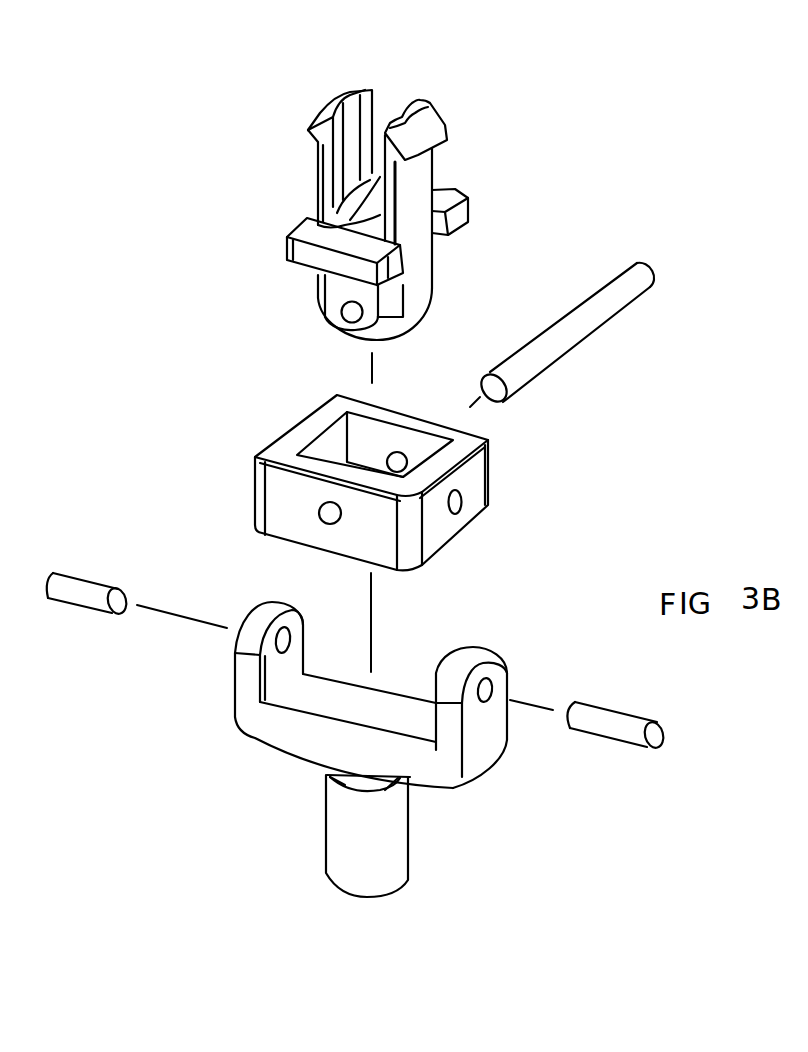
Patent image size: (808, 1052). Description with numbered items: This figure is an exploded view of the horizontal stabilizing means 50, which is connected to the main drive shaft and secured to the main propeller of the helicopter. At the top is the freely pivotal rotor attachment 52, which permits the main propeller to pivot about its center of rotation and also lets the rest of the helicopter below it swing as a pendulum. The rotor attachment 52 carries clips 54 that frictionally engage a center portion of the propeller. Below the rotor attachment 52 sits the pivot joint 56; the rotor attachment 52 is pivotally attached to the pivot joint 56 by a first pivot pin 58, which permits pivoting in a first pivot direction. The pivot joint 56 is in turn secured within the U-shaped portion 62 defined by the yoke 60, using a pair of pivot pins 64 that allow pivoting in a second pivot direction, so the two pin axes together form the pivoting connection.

The horizontal stabilizing means 50 is at (593, 433).
The rotor attachment 52 is at (424, 270).
The clips 54 is at (437, 103).
The pivot joint 56 is at (485, 477).
The first pivot pin 58 is at (587, 320).
The yoke 60 is at (393, 830).
The U-shaped portion 62 is at (440, 640).
The pivot pins 64 is at (73, 603).